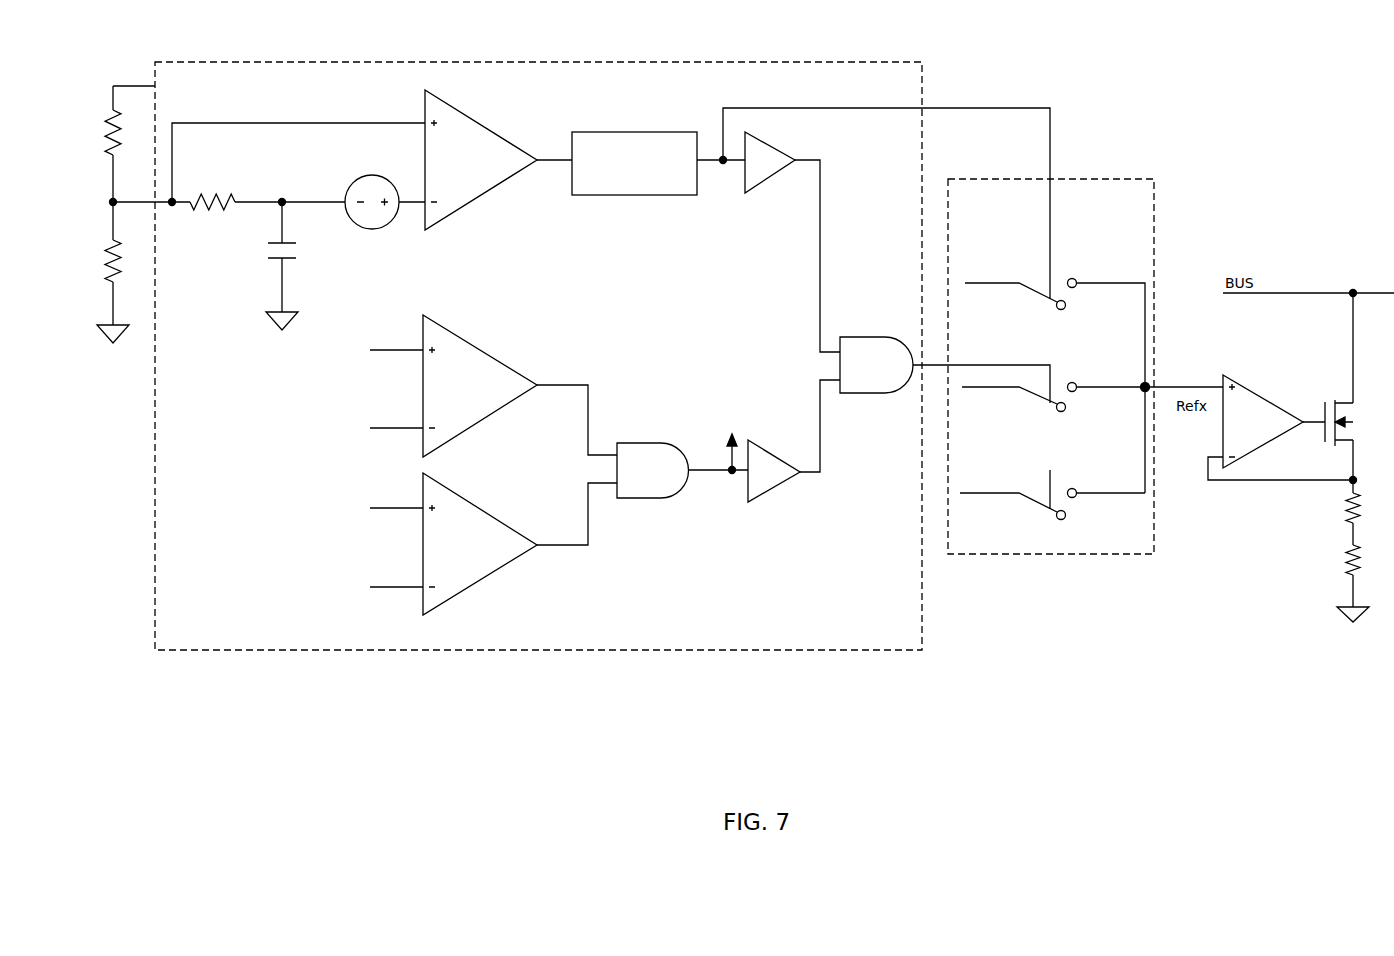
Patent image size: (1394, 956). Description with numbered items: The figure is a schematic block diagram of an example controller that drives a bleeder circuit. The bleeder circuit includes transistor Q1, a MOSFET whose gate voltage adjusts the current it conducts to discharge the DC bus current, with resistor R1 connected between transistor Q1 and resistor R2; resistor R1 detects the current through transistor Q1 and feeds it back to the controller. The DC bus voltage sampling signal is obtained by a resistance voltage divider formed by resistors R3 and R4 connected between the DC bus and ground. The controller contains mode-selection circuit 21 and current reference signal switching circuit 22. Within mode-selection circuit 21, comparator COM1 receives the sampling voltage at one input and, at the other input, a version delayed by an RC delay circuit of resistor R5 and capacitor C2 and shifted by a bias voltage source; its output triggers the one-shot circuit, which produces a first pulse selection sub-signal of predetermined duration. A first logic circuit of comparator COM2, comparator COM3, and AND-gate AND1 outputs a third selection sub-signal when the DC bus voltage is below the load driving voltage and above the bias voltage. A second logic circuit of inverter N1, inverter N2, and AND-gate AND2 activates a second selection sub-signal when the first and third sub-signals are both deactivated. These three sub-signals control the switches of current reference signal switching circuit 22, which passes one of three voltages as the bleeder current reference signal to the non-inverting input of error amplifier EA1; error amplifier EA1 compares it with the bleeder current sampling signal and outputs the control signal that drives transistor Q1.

The mode-selection circuit 21 is at (427, 62).
The current reference signal switching circuit 22 is at (1087, 179).
The resistor R1 is at (1367, 508).
The resistor R2 is at (1367, 560).
The resistor R3 is at (99, 132).
The resistor R4 is at (99, 261).
The resistor R5 is at (212, 188).
The capacitor C2 is at (267, 266).
The transistor Q1 is at (1345, 423).
The comparator COM1 is at (481, 160).
The comparator COM2 is at (480, 386).
The comparator COM3 is at (480, 544).
The inverter N1 is at (770, 174).
The inverter N2 is at (774, 483).
The AND-gate AND1 is at (653, 488).
The AND-gate AND2 is at (876, 382).
The error amplifier EA1 is at (1263, 421).